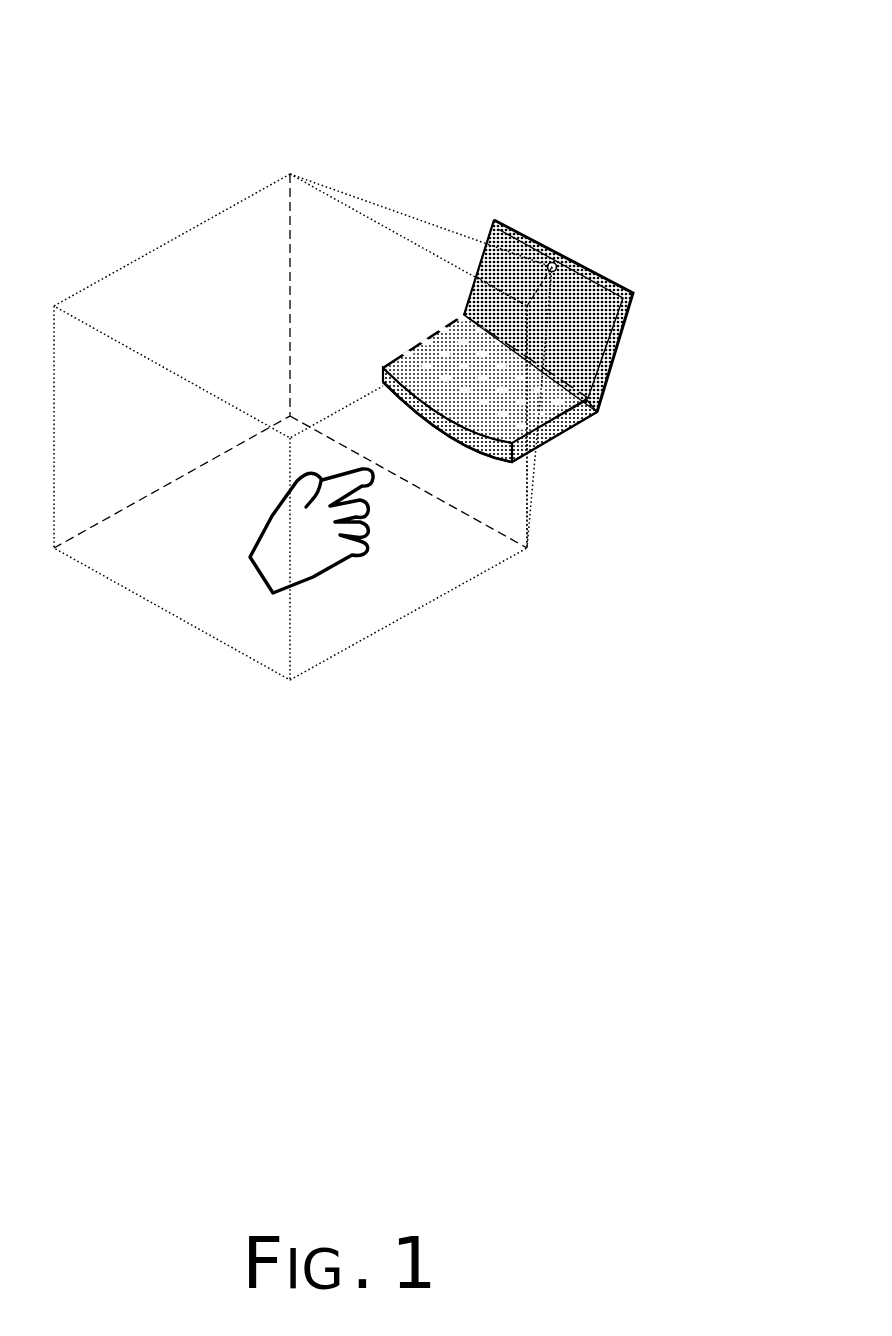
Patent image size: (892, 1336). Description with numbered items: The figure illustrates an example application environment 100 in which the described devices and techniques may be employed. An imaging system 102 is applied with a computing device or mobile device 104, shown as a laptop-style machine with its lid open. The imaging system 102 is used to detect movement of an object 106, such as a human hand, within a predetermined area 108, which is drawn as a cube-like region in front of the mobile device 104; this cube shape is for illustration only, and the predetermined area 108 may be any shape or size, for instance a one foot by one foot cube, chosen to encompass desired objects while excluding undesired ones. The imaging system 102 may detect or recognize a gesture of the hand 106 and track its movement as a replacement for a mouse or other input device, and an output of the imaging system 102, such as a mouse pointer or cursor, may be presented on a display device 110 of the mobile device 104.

The application environment 100 is at (505, 57).
The imaging system 102 is at (556, 262).
The computing device 104 is at (555, 320).
The object 106 is at (325, 578).
The predetermined area 108 is at (203, 222).
The display device 110 is at (612, 372).